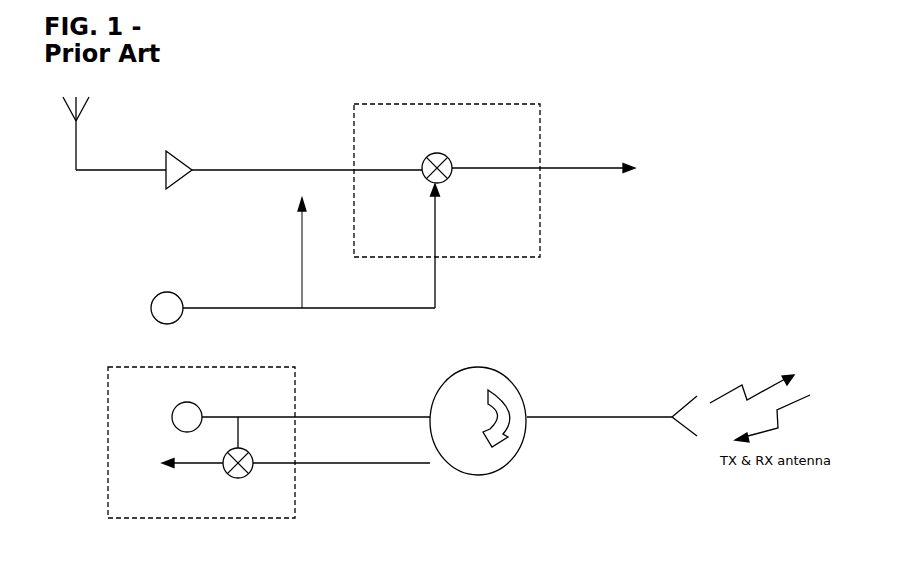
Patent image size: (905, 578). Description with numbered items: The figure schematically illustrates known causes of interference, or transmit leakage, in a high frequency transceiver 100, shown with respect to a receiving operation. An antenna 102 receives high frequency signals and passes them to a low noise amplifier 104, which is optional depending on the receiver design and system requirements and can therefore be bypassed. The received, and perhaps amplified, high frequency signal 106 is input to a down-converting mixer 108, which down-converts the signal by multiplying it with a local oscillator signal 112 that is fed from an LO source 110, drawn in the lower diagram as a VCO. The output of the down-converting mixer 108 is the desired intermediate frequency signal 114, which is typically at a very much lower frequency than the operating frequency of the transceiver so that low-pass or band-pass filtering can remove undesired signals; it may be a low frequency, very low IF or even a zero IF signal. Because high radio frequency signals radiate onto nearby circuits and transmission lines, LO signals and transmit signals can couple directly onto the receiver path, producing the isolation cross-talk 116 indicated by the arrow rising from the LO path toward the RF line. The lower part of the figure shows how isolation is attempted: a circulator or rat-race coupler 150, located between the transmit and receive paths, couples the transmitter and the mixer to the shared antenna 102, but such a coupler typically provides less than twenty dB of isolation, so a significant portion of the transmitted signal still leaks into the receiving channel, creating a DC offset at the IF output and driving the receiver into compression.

The high frequency transceiver 100 is at (255, 56).
The antenna 102 is at (74, 145).
The low noise amplifier 104 is at (175, 152).
The high frequency signal 106 is at (218, 167).
The down-converting mixer 108 is at (445, 146).
The LO source 110 is at (153, 300).
The local oscillator signal 112 is at (437, 277).
The intermediate frequency signal 114 is at (580, 170).
The isolation cross-talk 116 is at (298, 233).
The rat-race coupler 150 is at (465, 475).